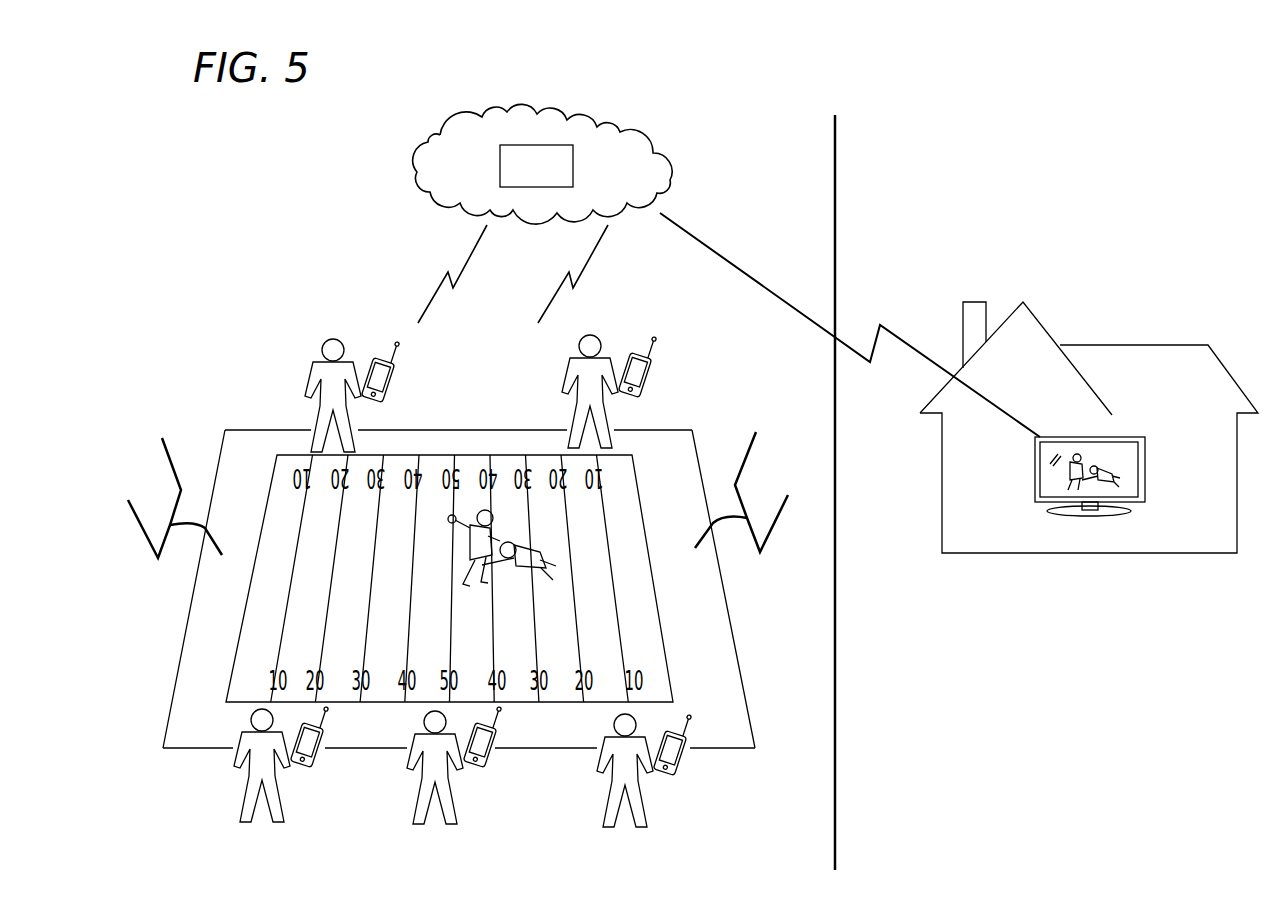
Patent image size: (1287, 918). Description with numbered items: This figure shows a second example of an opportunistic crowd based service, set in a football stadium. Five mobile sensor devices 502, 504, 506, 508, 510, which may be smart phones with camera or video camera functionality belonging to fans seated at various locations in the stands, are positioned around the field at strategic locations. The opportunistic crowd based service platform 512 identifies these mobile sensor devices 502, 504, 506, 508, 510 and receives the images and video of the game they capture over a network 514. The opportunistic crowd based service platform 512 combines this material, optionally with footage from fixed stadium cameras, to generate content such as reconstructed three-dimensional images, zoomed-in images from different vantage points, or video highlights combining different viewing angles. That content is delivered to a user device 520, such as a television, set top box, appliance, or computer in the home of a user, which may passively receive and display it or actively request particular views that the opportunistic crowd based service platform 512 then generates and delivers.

The mobile sensor device 502 is at (312, 770).
The mobile sensor device 504 is at (488, 770).
The mobile sensor device 506 is at (680, 775).
The mobile sensor device 508 is at (377, 355).
The mobile sensor device 510 is at (655, 357).
The opportunistic crowd based service platform 512 is at (545, 148).
The network 514 is at (488, 113).
The user device 520 is at (1122, 436).